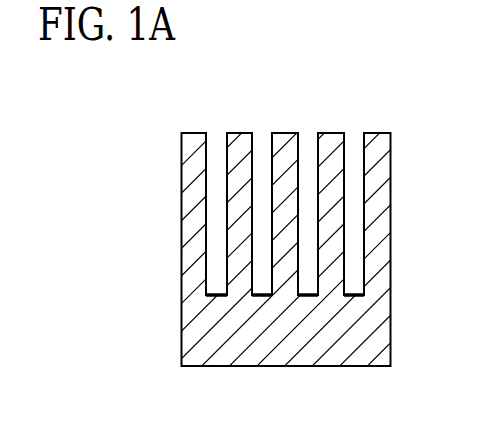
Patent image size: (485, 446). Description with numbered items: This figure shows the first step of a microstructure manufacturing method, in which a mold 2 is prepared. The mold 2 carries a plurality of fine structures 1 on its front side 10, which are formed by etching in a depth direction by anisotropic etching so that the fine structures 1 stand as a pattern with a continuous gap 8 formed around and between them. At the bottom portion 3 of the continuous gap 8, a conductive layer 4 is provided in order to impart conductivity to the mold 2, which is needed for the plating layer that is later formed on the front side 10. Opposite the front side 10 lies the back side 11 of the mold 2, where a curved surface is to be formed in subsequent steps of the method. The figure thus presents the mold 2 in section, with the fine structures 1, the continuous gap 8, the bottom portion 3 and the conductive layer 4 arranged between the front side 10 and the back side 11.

The fine structures 1 is at (300, 145).
The mold 2 is at (333, 353).
The bottom portion 3 is at (357, 294).
The conductive layer 4 is at (260, 293).
The continuous gap 8 is at (357, 210).
The front side 10 is at (232, 128).
The back side 11 is at (228, 366).